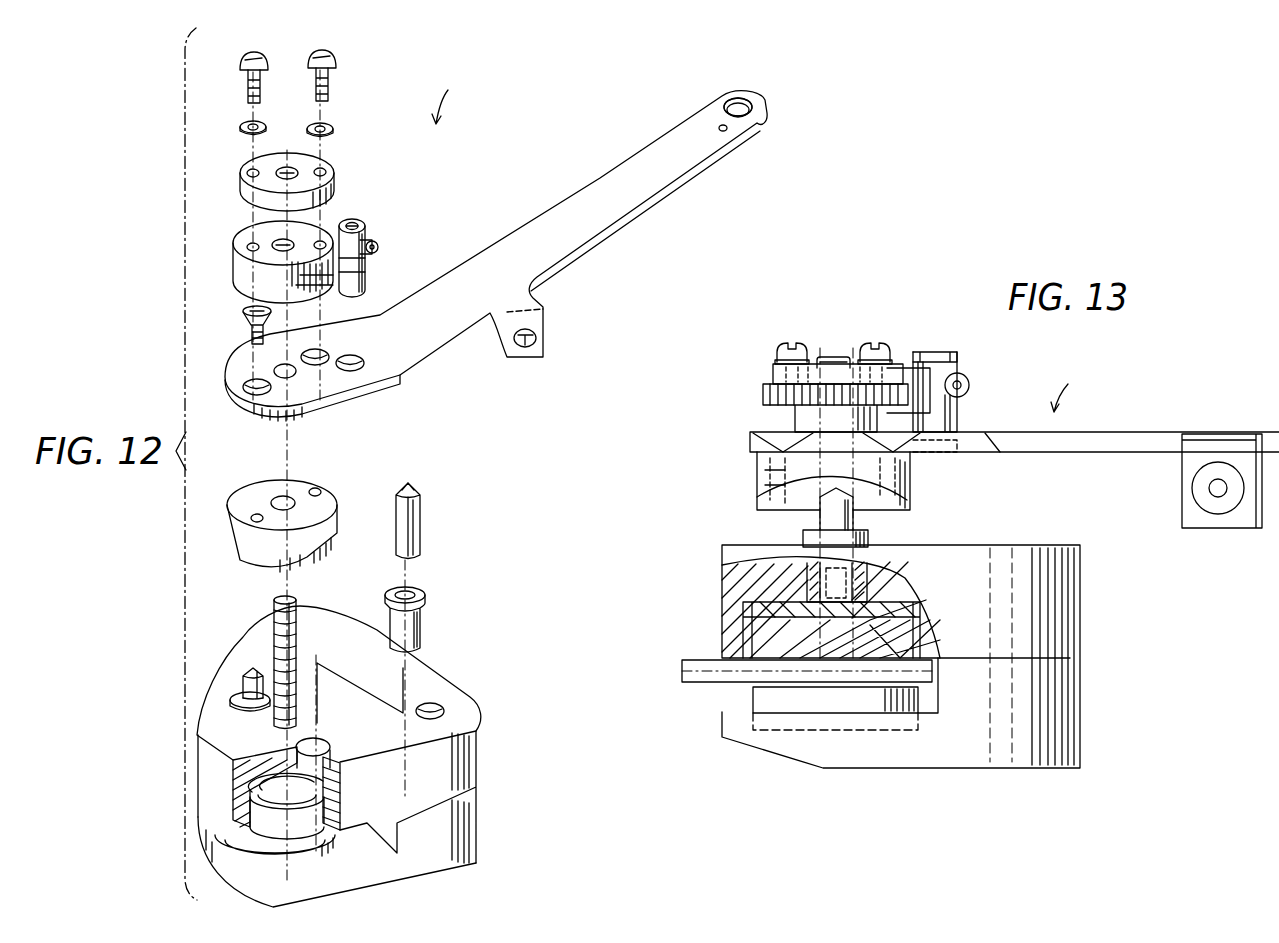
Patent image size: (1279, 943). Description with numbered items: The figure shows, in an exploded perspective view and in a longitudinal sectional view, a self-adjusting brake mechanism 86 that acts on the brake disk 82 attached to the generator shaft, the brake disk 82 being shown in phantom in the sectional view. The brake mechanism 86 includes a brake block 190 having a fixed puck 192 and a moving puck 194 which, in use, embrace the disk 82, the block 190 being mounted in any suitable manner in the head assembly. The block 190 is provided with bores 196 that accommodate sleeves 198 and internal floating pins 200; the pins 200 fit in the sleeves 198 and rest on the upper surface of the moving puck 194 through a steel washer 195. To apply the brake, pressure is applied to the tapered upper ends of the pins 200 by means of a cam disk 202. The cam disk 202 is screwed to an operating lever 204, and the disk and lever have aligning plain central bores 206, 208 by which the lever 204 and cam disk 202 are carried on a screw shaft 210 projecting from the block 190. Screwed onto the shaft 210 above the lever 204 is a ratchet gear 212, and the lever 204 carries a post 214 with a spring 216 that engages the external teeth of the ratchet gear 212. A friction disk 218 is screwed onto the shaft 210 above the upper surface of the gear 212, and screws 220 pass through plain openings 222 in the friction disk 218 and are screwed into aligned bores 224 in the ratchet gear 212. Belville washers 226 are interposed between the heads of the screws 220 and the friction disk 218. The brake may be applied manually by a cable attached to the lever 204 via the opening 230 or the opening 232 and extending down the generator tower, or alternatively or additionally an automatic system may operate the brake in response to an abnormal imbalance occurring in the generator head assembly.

In FIG. 13, the brake disk 82 is at (695, 660).
In FIG. 12, the brake mechanism 86 is at (453, 100).
In FIG. 13, the brake mechanism 86 is at (1074, 388).
In FIG. 12, the brake block 190 is at (460, 828).
In FIG. 13, the brake block 190 is at (1060, 622).
In FIG. 12, the fixed puck 192 is at (288, 855).
In FIG. 13, the fixed puck 192 is at (760, 700).
In FIG. 12, the moving puck 194 is at (337, 807).
In FIG. 13, the moving puck 194 is at (763, 630).
In FIG. 12, the steel washer 195 is at (337, 782).
In FIG. 13, the steel washer 195 is at (763, 608).
In FIG. 12, the bores 196 is at (327, 737).
In FIG. 12, the sleeves 198 is at (422, 628).
In FIG. 13, the sleeves 198 is at (867, 537).
In FIG. 12, the floating pins 200 is at (420, 527).
In FIG. 13, the floating pins 200 is at (850, 515).
In FIG. 12, the cam disk 202 is at (235, 550).
In FIG. 13, the cam disk 202 is at (757, 493).
In FIG. 12, the operating lever 204 is at (557, 213).
In FIG. 13, the operating lever 204 is at (1000, 445).
In FIG. 12, the central bore 206 is at (322, 490).
In FIG. 12, the central bore 208 is at (297, 375).
In FIG. 12, the screw shaft 210 is at (272, 625).
In FIG. 12, the ratchet gear 212 is at (240, 256).
In FIG. 13, the ratchet gear 212 is at (795, 418).
In FIG. 12, the post 214 is at (367, 270).
In FIG. 13, the post 214 is at (957, 415).
In FIG. 12, the spring 216 is at (363, 232).
In FIG. 13, the spring 216 is at (917, 378).
In FIG. 12, the friction disk 218 is at (242, 187).
In FIG. 13, the friction disk 218 is at (773, 373).
In FIG. 12, the screws 220 is at (248, 82).
In FIG. 13, the screws 220 is at (782, 343).
In FIG. 12, the plain openings 222 is at (248, 170).
In FIG. 12, the bores 224 is at (252, 240).
In FIG. 12, the Belville washers 226 is at (246, 127).
In FIG. 13, the Belville washers 226 is at (773, 360).
In FIG. 12, the opening 230 is at (525, 350).
In FIG. 13, the opening 230 is at (1195, 490).
In FIG. 12, the opening 232 is at (750, 93).